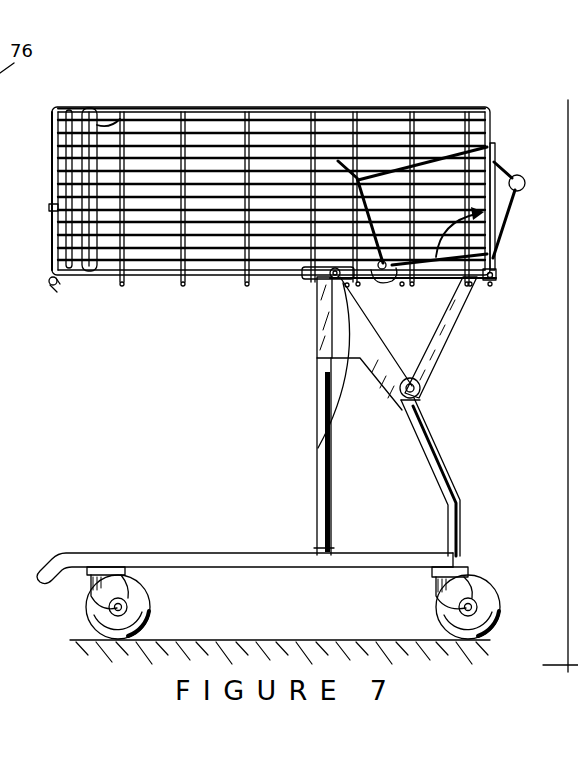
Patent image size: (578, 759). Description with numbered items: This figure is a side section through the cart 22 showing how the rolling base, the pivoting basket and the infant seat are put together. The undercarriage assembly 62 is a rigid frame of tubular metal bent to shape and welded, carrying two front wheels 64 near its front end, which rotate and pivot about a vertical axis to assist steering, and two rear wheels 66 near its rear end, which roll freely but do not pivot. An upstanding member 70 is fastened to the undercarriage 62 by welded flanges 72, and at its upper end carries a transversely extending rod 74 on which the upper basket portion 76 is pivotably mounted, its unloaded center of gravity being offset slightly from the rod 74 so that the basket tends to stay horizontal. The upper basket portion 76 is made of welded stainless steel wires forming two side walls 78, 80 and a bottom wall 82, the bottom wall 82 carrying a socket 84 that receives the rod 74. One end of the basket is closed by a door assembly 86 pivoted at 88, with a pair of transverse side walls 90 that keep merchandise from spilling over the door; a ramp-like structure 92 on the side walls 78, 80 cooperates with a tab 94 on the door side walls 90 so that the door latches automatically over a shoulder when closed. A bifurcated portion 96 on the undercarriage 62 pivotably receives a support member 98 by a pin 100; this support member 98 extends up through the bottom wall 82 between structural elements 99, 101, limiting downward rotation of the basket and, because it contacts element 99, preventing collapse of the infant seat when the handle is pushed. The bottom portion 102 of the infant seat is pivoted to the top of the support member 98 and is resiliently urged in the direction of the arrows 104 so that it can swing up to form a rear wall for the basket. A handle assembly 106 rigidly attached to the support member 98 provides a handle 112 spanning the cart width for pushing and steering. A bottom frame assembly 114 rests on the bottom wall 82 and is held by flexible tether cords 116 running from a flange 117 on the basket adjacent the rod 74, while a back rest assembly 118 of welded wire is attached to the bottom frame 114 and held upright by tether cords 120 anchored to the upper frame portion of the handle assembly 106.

The cart 22 is at (368, 96).
The undercarriage assembly 62 is at (263, 553).
The front wheels 64 is at (150, 611).
The rear wheels 66 is at (437, 612).
The upstanding member 70 is at (317, 346).
The flanges 72 is at (318, 372).
The transversely extending rod 74 is at (329, 286).
The upper basket portion 76 is at (284, 96).
The side wall 78 is at (577, 148).
The side wall 80 is at (197, 107).
The bottom wall 82 is at (183, 283).
The socket 84 is at (328, 280).
The door assembly 86 is at (46, 170).
The pivot 88 is at (60, 285).
The side walls 90 is at (120, 122).
The ramp-like structure 92 is at (77, 105).
The tab 94 is at (85, 105).
The bifurcated portion 96 is at (414, 400).
The support member 98 is at (453, 325).
The structural element 99 is at (467, 279).
The pin 100 is at (420, 388).
The structural element 101 is at (491, 280).
The bottom portion of infant seat 102 is at (496, 251).
The arrows 104 is at (492, 237).
The handle assembly 106 is at (512, 162).
The handle 112 is at (527, 181).
The bottom frame assembly 114 is at (290, 268).
The tether cords 116 is at (380, 283).
The flange 117 is at (318, 436).
The back rest assembly 118 is at (350, 160).
The tether cords 120 is at (362, 178).